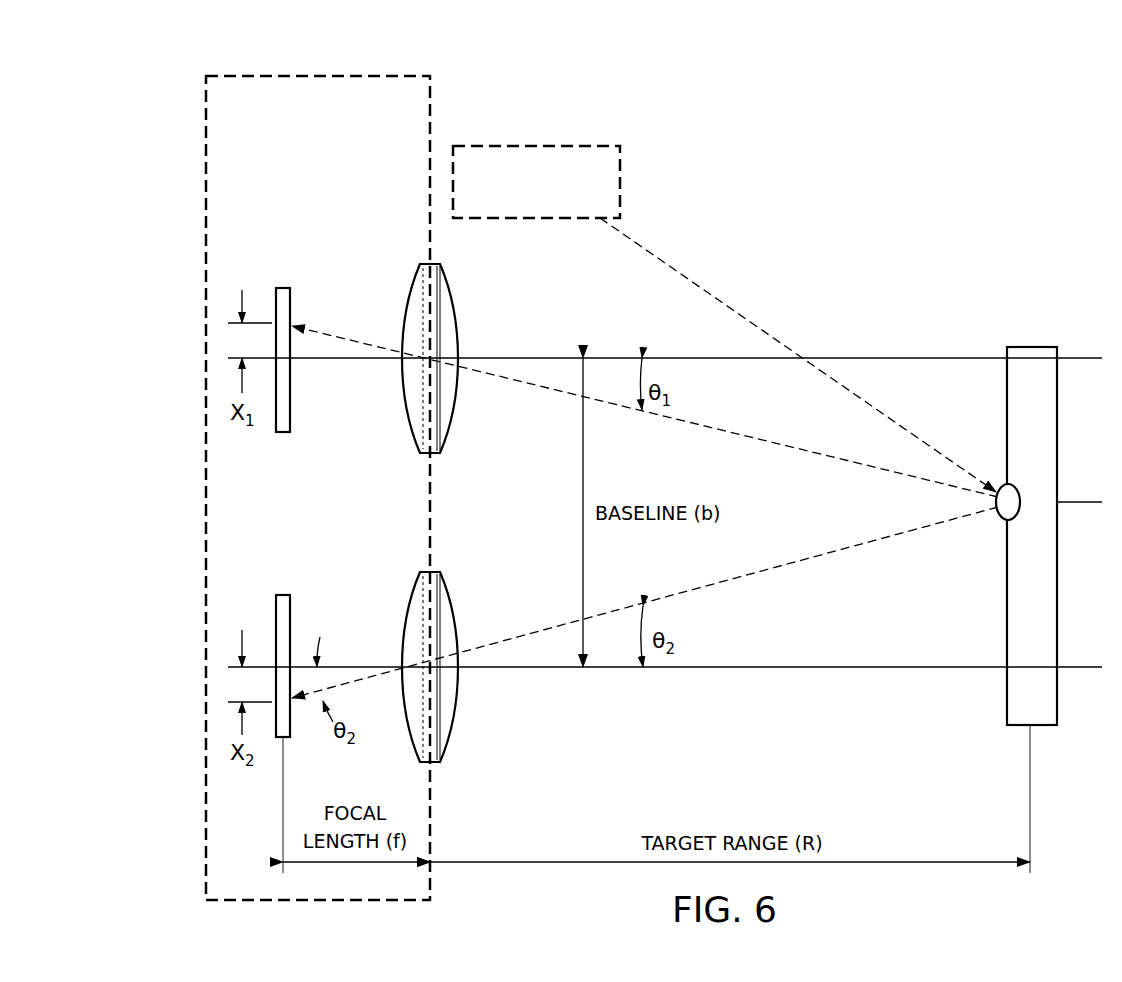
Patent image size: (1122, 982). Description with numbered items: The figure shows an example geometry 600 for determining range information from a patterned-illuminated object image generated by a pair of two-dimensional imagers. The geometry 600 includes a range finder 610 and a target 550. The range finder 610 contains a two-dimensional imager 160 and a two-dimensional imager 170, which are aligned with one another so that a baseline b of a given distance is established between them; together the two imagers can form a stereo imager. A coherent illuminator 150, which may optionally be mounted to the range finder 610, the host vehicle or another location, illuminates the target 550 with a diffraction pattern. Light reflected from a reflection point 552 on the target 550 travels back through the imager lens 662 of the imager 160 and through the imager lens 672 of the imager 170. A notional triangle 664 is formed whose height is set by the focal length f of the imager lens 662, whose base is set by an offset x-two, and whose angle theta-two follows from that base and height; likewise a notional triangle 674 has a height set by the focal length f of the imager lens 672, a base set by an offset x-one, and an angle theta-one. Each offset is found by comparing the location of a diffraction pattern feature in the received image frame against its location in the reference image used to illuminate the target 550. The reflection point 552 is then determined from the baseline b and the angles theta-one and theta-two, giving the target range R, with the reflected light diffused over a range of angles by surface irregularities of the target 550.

The geometry 600 is at (905, 124).
The range finder 610 is at (245, 72).
The coherent illuminator 150 is at (504, 145).
The 2D imager 170 is at (283, 287).
The 2D imager 160 is at (283, 594).
The imager lens 672 is at (458, 343).
The imager lens 662 is at (458, 688).
The notional triangle 674 is at (349, 360).
The notional triangle 664 is at (348, 666).
The target 550 is at (1030, 346).
The reflection point 552 is at (1000, 514).